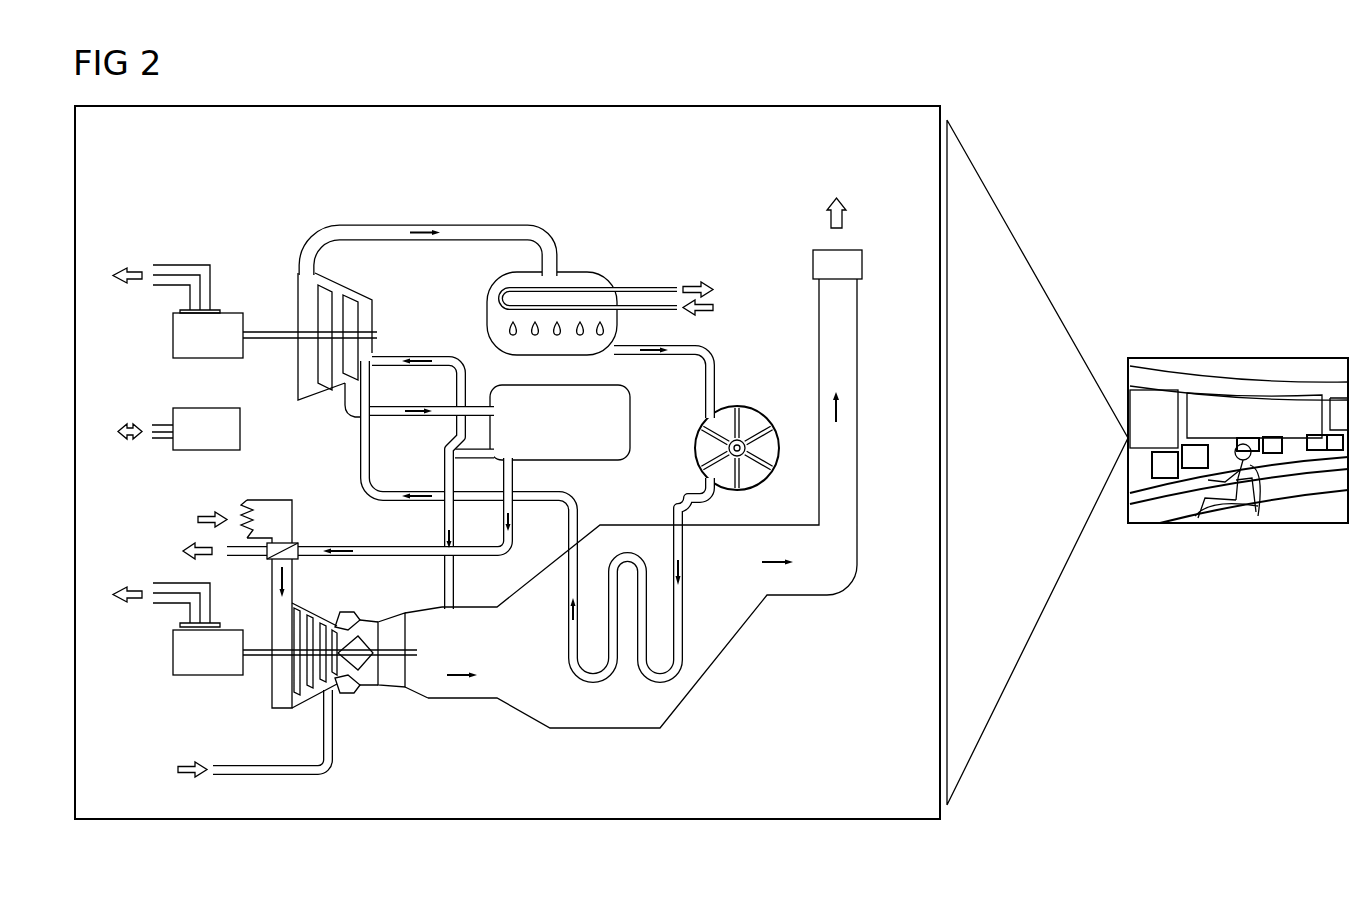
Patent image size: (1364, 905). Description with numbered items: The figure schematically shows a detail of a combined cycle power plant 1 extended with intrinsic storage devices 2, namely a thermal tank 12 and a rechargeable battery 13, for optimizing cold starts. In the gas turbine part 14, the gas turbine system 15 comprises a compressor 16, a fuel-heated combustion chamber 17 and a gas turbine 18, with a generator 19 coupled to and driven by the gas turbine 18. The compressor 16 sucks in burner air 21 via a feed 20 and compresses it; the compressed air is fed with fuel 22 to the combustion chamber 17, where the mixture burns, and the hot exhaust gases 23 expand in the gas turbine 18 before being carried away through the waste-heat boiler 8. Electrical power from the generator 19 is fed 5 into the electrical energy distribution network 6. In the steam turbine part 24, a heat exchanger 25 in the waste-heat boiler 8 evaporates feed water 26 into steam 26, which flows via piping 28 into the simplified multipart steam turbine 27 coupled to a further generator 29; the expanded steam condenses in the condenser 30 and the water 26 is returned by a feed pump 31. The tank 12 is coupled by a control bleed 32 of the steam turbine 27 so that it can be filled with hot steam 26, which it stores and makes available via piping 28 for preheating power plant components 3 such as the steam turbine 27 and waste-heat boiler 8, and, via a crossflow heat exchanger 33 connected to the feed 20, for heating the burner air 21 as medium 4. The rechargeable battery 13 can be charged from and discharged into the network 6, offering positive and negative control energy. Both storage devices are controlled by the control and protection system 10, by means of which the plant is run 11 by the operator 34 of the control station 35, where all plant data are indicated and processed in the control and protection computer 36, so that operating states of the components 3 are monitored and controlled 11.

The combined cycle power plant 1 is at (1067, 149).
The sensor 2 is at (401, 422).
The power plant components 3 is at (611, 487).
The medium 4 is at (195, 519).
The feeding of electrical power 5 is at (130, 290).
The electrical energy distribution network 6 is at (155, 463).
The waste-heat boiler 8 is at (597, 720).
The control and protection system 10 is at (1218, 444).
The running of the power plant 11 is at (1014, 449).
The tank 12 is at (514, 432).
The rechargeable battery 13 is at (182, 441).
The gas turbine part 14 is at (385, 703).
The gas turbine system 15 is at (355, 703).
The compressor 16 is at (310, 700).
The combustion chamber 17 is at (360, 622).
The gas turbine 18 is at (392, 625).
The generator 19 is at (196, 664).
The feed 20 is at (268, 510).
The burner air 21 is at (165, 533).
The fuel 22 is at (176, 769).
The hot exhaust gases 23 is at (846, 215).
The steam turbine part 24 is at (327, 314).
The heat exchanger 25 is at (690, 635).
The water/steam 26 is at (424, 224).
The steam turbine 27 is at (366, 299).
The piping 28 is at (490, 224).
The generator 29 is at (196, 347).
The condenser 30 is at (563, 352).
The feed pump 31 is at (750, 416).
The control bleed 32 is at (335, 385).
The crossflow heat exchanger 33 is at (300, 537).
The operator 34 is at (1243, 480).
The control station 35 is at (1146, 496).
The control and protection computer 36 is at (1163, 470).